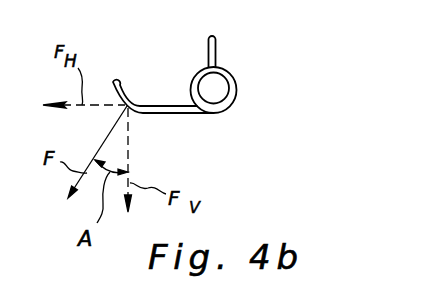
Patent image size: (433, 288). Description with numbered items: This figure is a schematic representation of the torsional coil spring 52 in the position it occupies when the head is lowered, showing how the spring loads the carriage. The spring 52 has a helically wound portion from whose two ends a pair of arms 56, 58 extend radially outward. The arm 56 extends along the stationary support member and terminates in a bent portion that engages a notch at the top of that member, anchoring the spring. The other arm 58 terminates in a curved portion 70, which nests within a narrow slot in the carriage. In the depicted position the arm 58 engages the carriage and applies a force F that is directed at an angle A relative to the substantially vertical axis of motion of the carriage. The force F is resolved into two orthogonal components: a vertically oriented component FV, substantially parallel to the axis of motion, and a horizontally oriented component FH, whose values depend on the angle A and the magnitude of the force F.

The torsional coil spring 52 is at (236, 100).
The arm 56 is at (216, 46).
The arm 58 is at (183, 113).
The curved portion 70 is at (121, 84).